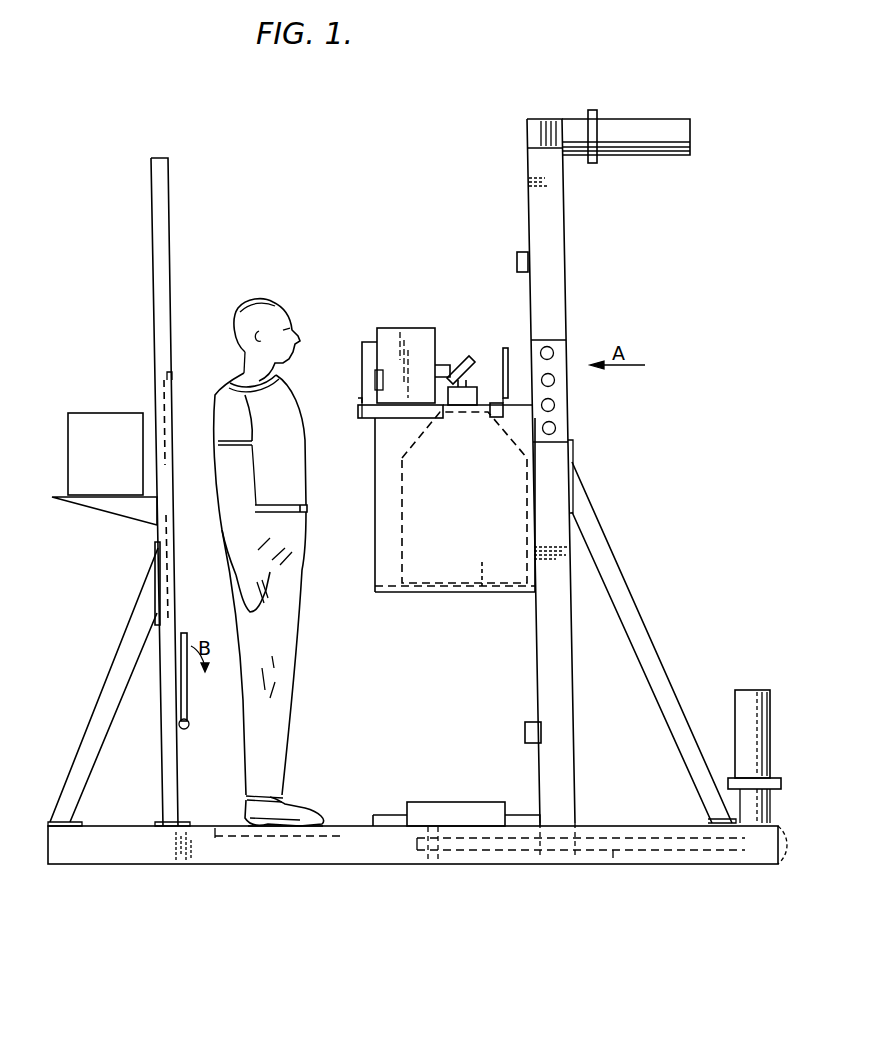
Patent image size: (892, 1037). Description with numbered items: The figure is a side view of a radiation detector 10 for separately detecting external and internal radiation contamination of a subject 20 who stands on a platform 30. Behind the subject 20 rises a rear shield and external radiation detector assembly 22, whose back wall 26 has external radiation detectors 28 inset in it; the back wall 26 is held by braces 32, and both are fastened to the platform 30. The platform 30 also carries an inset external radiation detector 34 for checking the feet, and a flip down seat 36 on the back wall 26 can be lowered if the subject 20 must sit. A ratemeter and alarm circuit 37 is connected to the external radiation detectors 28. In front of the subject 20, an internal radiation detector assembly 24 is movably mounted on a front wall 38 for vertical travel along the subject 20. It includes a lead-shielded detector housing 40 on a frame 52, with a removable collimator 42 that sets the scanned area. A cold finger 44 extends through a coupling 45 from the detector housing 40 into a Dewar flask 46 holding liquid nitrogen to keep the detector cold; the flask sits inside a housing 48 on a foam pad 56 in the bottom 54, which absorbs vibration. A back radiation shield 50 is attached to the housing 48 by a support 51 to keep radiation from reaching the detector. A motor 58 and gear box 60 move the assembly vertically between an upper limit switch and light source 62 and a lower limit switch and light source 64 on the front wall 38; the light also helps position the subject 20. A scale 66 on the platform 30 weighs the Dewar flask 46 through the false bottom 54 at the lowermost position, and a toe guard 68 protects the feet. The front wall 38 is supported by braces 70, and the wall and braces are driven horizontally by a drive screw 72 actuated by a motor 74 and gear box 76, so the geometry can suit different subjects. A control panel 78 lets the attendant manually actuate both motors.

The radiation detector 10 is at (115, 891).
The subject 20 is at (214, 390).
The rear shield and external radiation detector assembly 22 is at (91, 400).
The internal radiation detector assembly 24 is at (378, 302).
The back wall 26 is at (153, 276).
The external radiation detectors 28 is at (160, 384).
The platform 30 is at (388, 860).
The braces 32 is at (84, 738).
The external radiation detector 34 is at (262, 838).
The flip down seat 36 is at (187, 698).
The ratemeter and alarm circuit 37 is at (68, 452).
The front wall 38 is at (577, 211).
The detector housing 40 is at (411, 328).
The removable collimator 42 is at (362, 343).
The cold finger 44 is at (446, 370).
The coupling 45 is at (471, 362).
The Dewar flask 46 is at (482, 592).
The housing 48 is at (375, 508).
The back radiation shield 50 is at (500, 330).
The support 51 is at (503, 404).
The frame 52 is at (361, 418).
The bottom 54 is at (440, 594).
The foam pad 56 is at (388, 594).
The motor 58 is at (620, 119).
The gear box 60 is at (540, 119).
The upper limit switch and light source 62 is at (517, 254).
The lower limit switch and light source 64 is at (526, 726).
The scale 66 is at (482, 802).
The toe guard 68 is at (380, 815).
The braces 70 is at (598, 518).
The drive screw 72 is at (615, 868).
The motor 74 is at (734, 692).
The gear box 76 is at (774, 856).
The control panel 78 is at (568, 398).